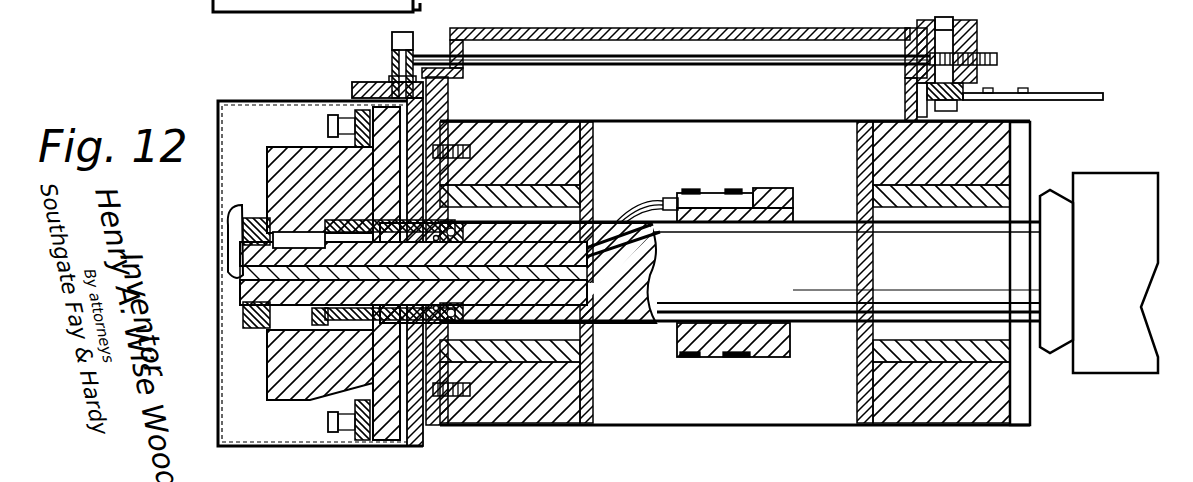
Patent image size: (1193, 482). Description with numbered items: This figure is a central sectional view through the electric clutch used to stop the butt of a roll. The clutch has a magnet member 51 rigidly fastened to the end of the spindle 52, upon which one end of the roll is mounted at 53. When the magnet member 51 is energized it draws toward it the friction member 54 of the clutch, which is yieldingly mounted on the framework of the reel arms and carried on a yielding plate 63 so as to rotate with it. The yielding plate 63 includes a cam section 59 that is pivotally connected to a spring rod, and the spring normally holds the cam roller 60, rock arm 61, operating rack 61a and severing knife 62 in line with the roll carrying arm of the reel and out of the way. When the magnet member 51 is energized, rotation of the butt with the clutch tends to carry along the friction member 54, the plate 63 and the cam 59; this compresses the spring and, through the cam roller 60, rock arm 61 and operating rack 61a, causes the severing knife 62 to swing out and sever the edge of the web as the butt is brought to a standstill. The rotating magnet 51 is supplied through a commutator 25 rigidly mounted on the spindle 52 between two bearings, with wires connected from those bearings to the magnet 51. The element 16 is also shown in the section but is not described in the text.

The frame bar 16 is at (688, 60).
The commutator 25 is at (760, 357).
The magnet member 51 is at (280, 383).
The spindle 52 is at (710, 272).
The roll mounting 53 is at (1056, 353).
The friction member 54 is at (328, 420).
The cam section 59 is at (355, 90).
The cam roller 60 is at (390, 80).
The rock arm 61 is at (392, 62).
The operating rack 61a is at (993, 55).
The severing knife 62 is at (1033, 87).
The yielding plate 63 is at (437, 330).